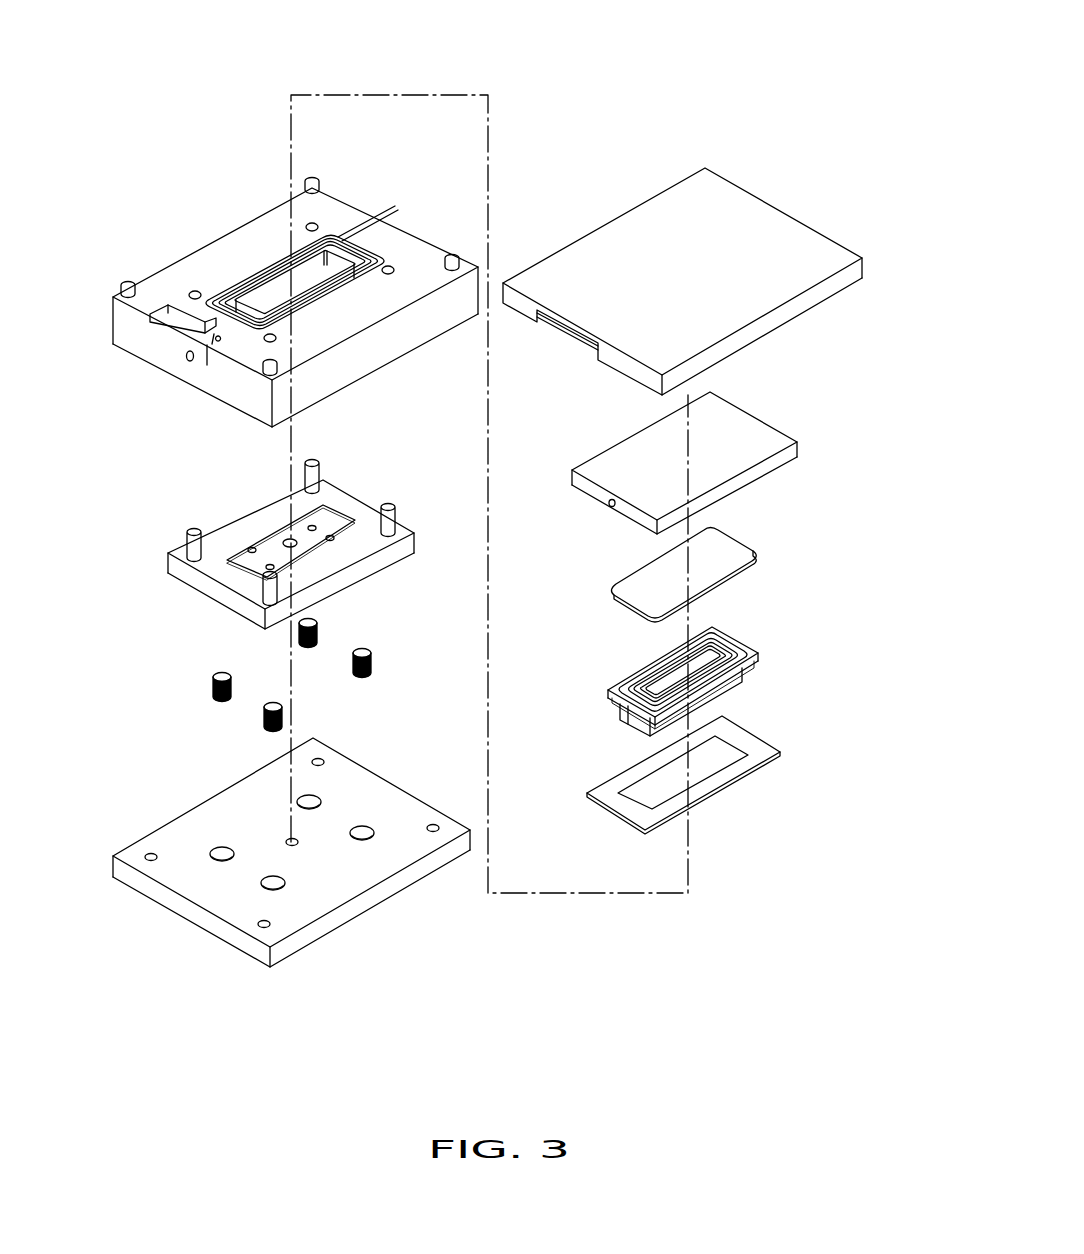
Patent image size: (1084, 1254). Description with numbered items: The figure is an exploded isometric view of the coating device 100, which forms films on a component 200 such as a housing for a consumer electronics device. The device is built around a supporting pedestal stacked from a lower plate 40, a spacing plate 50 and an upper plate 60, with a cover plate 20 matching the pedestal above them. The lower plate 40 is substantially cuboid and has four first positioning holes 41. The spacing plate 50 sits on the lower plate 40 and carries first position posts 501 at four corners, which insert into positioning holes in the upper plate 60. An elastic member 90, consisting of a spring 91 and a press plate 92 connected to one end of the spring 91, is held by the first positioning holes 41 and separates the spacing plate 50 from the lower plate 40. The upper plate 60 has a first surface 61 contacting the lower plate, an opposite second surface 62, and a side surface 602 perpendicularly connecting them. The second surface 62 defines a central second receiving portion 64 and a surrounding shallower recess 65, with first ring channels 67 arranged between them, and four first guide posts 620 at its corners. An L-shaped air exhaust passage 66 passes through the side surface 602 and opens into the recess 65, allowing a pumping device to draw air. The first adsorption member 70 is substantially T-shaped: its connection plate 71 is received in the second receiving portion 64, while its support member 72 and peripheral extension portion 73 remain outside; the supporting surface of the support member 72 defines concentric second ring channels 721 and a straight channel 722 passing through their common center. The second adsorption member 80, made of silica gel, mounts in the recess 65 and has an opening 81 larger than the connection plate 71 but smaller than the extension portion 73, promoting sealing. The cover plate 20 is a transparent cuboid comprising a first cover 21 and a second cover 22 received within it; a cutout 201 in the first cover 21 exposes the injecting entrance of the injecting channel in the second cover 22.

The coating device 100 is at (538, 29).
The cover plate 20 is at (863, 158).
The first cover 21 is at (740, 205).
The cutout 201 is at (580, 338).
The second cover 22 is at (745, 430).
The component 200 is at (758, 530).
The first adsorption member 70 is at (744, 625).
The support member 72 is at (738, 647).
The straight channel 722 is at (672, 650).
The second ring channels 721 is at (620, 678).
The connection plate 71 is at (742, 678).
The extension portion 73 is at (625, 711).
The second adsorption member 80 is at (755, 747).
The opening 81 is at (718, 765).
The upper plate 60 is at (322, 373).
The first surface 61 is at (186, 384).
The second surface 62 is at (170, 272).
The side surface 602 is at (235, 397).
The second receiving portion 64 is at (332, 268).
The recess 65 is at (196, 290).
The air exhaust passage 66 is at (187, 357).
The first ring channels 67 is at (247, 267).
The first guide posts 620 is at (452, 262).
The spacing plate 50 is at (368, 568).
The first position posts 501 is at (188, 532).
The elastic member 90 is at (130, 647).
The spring 91 is at (213, 691).
The press plate 92 is at (218, 679).
The lower plate 40 is at (365, 900).
The first positioning holes 41 is at (212, 850).